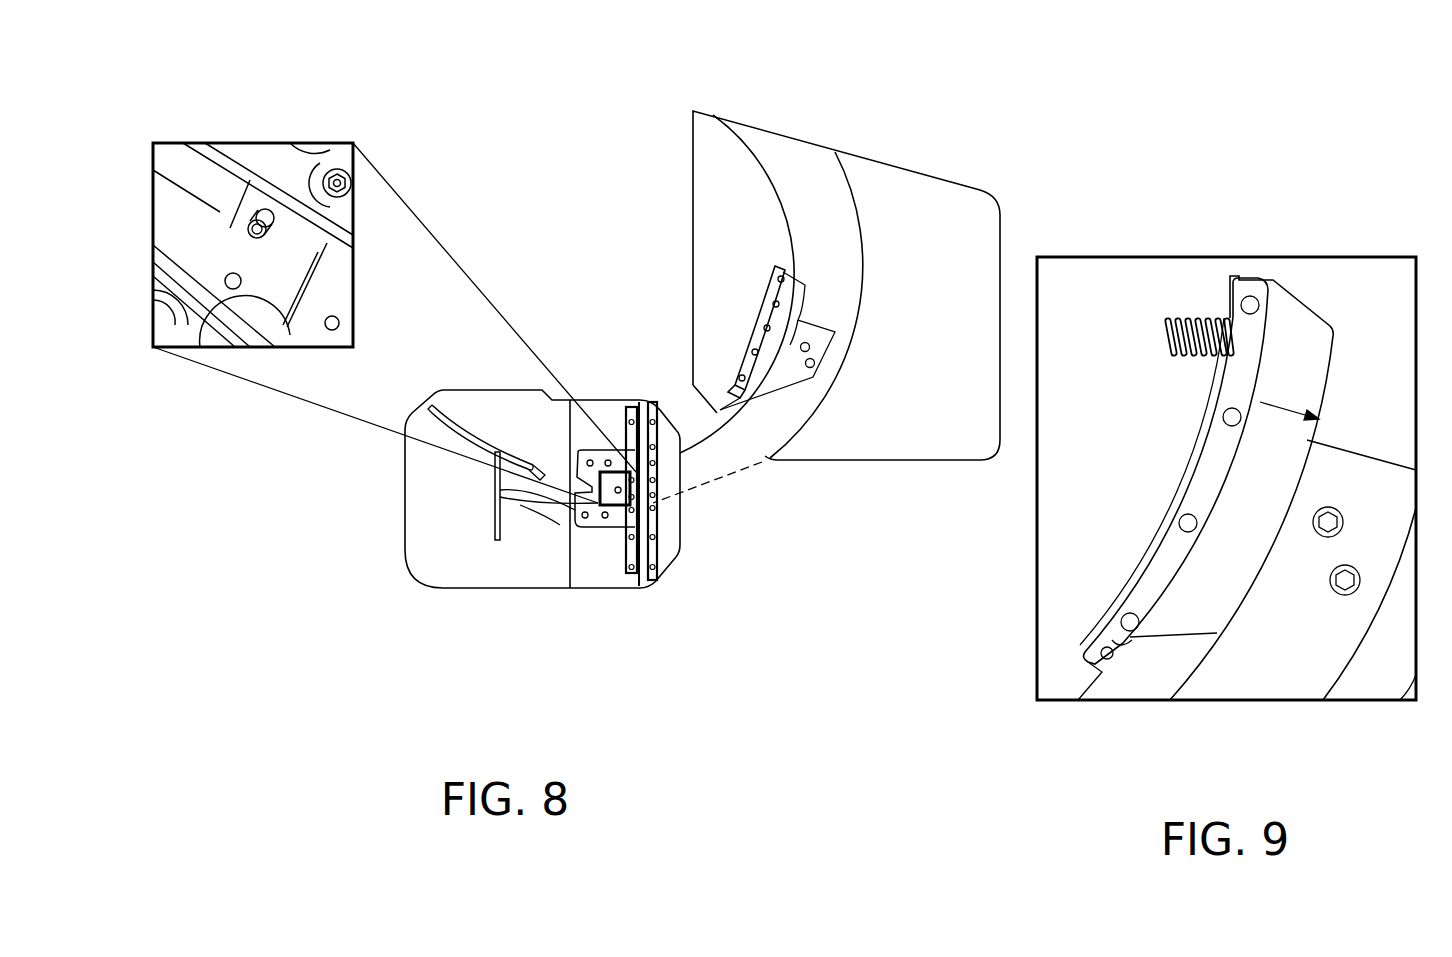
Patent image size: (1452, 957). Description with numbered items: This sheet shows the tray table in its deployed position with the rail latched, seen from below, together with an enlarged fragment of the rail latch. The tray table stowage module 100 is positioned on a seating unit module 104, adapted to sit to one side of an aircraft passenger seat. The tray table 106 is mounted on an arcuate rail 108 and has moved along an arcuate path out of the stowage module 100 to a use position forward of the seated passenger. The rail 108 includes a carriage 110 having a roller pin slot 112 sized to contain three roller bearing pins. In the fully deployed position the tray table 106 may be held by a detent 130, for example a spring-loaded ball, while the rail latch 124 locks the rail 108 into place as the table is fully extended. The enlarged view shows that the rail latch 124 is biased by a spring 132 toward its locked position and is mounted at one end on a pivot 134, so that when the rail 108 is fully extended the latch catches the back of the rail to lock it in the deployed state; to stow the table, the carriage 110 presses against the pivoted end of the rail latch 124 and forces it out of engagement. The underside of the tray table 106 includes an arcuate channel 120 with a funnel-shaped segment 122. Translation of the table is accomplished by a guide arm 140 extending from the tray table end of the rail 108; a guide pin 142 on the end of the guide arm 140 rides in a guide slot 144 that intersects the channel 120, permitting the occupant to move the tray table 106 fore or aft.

In FIG. 8, the tray table stowage module 100 is at (642, 238).
In FIG. 8, the seating unit module 104 is at (913, 185).
In FIG. 8, the tray table 106 is at (472, 567).
In FIG. 8, the arcuate rail 108 is at (182, 177).
In FIG. 9, the arcuate rail 108 is at (1290, 668).
In FIG. 8, the carriage 110 is at (593, 520).
In FIG. 8, the roller pin slot 112 is at (577, 485).
In FIG. 8, the arcuate channel 120 is at (447, 413).
In FIG. 8, the funnel-shaped segment 122 is at (530, 463).
In FIG. 8, the rail latch 124 is at (795, 300).
In FIG. 9, the rail latch 124 is at (1292, 307).
In FIG. 8, the detent 130 is at (258, 212).
In FIG. 9, the spring 132 is at (1197, 317).
In FIG. 8, the pivot 134 is at (747, 367).
In FIG. 9, the pivot 134 is at (1127, 613).
In FIG. 8, the guide arm 140 is at (538, 508).
In FIG. 8, the guide pin 142 is at (497, 497).
In FIG. 8, the guide slot 144 is at (497, 478).